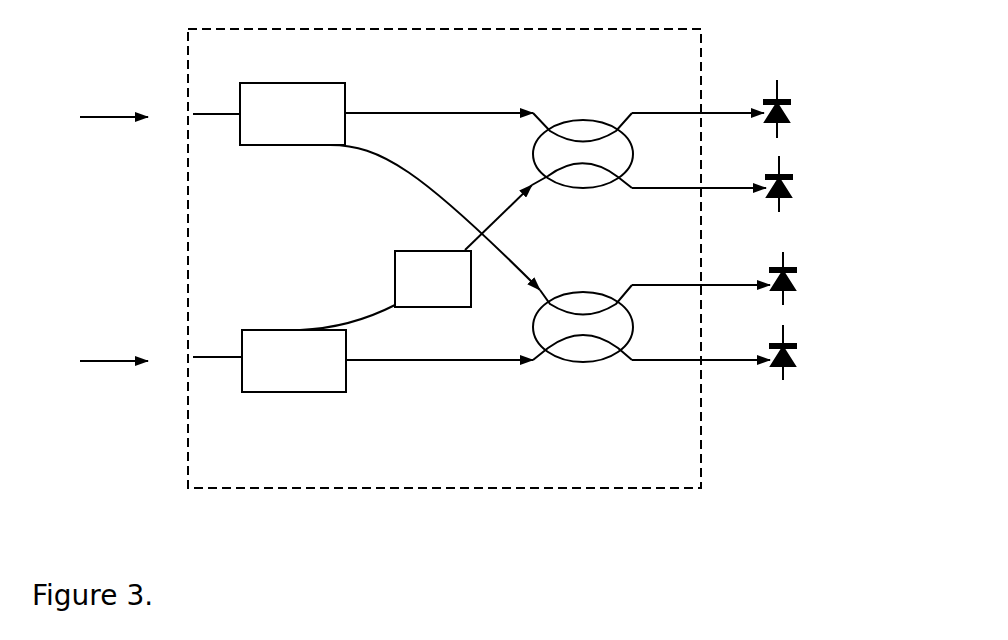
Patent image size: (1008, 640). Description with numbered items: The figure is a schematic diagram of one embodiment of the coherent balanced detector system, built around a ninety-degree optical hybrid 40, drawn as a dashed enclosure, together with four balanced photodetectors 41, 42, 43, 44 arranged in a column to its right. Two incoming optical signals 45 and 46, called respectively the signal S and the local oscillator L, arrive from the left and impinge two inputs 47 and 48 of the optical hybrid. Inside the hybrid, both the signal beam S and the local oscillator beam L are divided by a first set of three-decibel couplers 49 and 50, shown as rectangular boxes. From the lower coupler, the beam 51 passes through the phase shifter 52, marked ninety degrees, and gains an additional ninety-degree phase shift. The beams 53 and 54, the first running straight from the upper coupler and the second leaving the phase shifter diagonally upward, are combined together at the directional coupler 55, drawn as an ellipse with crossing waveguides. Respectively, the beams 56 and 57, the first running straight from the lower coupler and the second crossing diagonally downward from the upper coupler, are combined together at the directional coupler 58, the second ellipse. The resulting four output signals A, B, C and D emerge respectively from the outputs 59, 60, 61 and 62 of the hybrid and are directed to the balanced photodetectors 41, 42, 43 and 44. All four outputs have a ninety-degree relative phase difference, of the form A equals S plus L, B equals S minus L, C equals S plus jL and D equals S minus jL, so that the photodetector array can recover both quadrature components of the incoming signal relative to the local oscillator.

The 90° optical hybrid 40 is at (444, 258).
The balanced photodetector 41 is at (805, 109).
The balanced photodetector 42 is at (808, 184).
The balanced photodetector 43 is at (812, 278).
The balanced photodetector 44 is at (812, 352).
The incoming optical signal 45 is at (93, 117).
The incoming optical signal 46 is at (97, 361).
The input 47 is at (216, 91).
The input 48 is at (217, 379).
The 3 dB coupler 49 is at (292, 114).
The 3 dB coupler 50 is at (294, 361).
The beam 51 is at (347, 288).
The phase shifter 52 is at (433, 293).
The beam 53 is at (439, 99).
The beam 54 is at (498, 207).
The directional coupler 55 is at (582, 129).
The beam 56 is at (439, 381).
The beam 57 is at (435, 227).
The directional coupler 58 is at (583, 344).
The output 59 is at (698, 99).
The output 60 is at (699, 193).
The output 61 is at (701, 287).
The output 62 is at (701, 370).